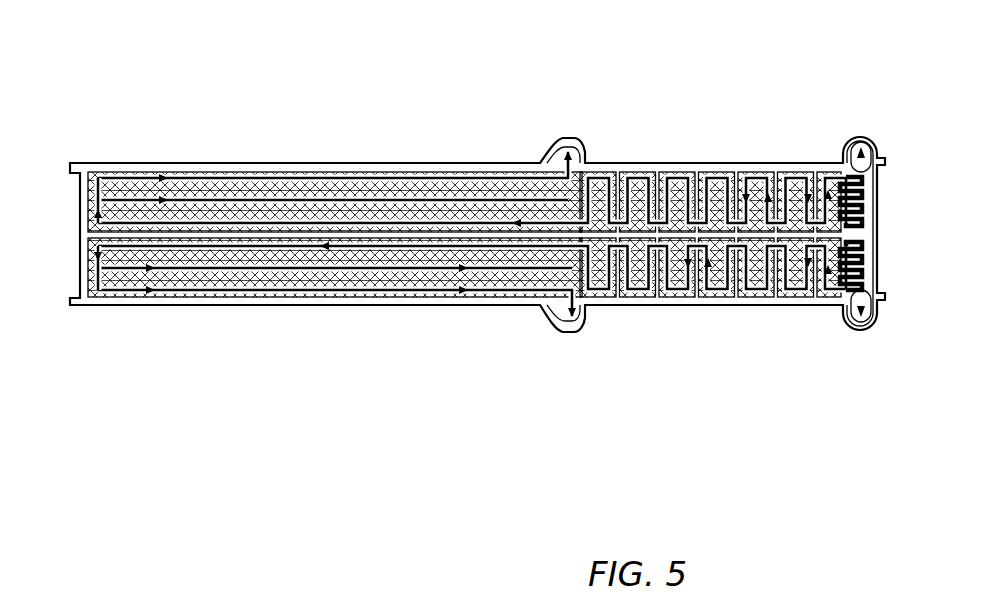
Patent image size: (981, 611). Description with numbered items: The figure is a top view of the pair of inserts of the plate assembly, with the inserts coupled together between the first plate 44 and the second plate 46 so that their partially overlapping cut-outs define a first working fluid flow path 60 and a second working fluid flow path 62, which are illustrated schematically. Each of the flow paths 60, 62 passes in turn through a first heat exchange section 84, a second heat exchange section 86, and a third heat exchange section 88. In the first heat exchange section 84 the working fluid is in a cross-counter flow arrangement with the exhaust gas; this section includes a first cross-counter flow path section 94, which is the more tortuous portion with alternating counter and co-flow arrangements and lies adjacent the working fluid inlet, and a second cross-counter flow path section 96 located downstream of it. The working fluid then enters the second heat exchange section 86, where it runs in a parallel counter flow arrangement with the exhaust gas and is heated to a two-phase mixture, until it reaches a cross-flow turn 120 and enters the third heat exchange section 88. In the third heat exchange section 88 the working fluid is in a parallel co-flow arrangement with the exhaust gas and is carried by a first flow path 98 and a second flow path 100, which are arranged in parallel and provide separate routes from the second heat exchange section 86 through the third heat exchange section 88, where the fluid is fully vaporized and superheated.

The first plate 44 is at (280, 170).
The second plate 46 is at (293, 173).
The first working fluid flow path 60 is at (684, 176).
The second working fluid flow path 62 is at (642, 290).
The first heat exchange section 84 is at (745, 180).
The second heat exchange section 86 is at (453, 227).
The third heat exchange section 88 is at (208, 203).
The first cross-counter flow path section 94 is at (863, 184).
The second cross-counter flow path section 96 is at (808, 180).
The first flow path 98 is at (243, 180).
The second flow path 100 is at (135, 205).
The cross-flow turn 120 is at (97, 200).